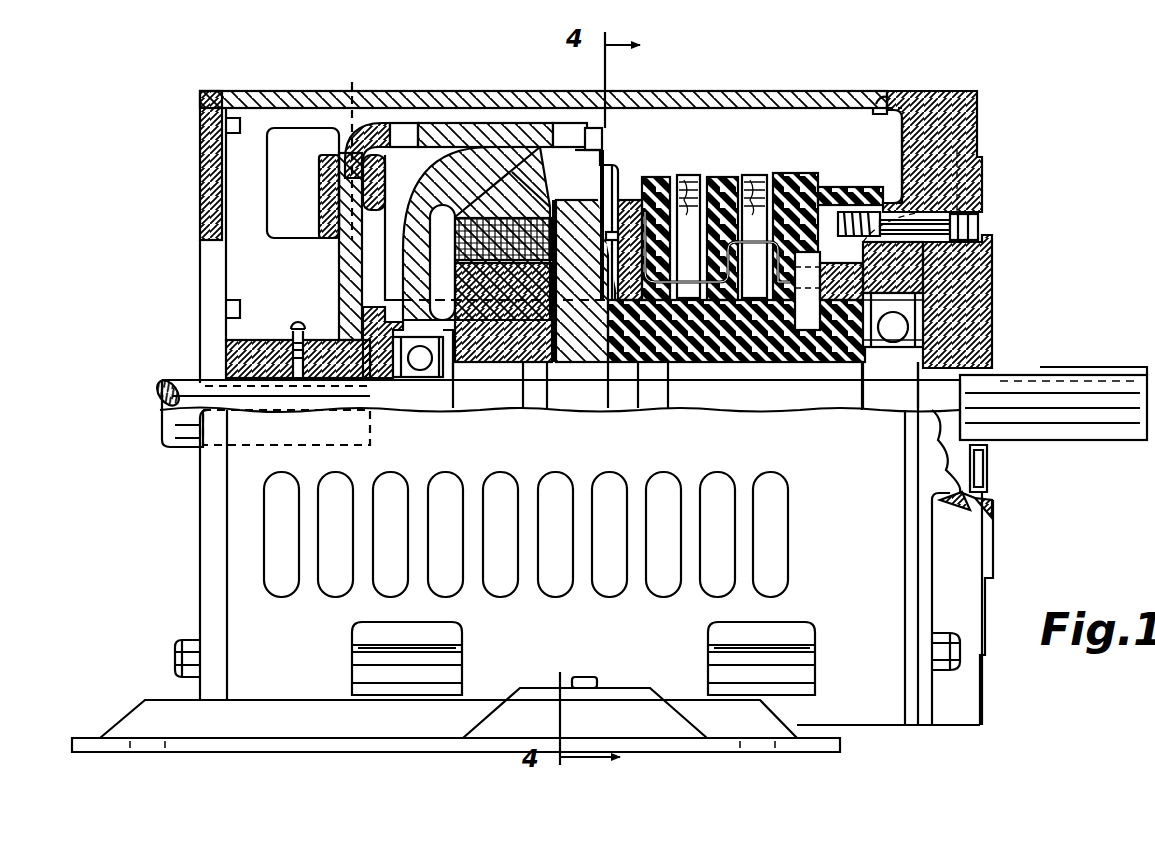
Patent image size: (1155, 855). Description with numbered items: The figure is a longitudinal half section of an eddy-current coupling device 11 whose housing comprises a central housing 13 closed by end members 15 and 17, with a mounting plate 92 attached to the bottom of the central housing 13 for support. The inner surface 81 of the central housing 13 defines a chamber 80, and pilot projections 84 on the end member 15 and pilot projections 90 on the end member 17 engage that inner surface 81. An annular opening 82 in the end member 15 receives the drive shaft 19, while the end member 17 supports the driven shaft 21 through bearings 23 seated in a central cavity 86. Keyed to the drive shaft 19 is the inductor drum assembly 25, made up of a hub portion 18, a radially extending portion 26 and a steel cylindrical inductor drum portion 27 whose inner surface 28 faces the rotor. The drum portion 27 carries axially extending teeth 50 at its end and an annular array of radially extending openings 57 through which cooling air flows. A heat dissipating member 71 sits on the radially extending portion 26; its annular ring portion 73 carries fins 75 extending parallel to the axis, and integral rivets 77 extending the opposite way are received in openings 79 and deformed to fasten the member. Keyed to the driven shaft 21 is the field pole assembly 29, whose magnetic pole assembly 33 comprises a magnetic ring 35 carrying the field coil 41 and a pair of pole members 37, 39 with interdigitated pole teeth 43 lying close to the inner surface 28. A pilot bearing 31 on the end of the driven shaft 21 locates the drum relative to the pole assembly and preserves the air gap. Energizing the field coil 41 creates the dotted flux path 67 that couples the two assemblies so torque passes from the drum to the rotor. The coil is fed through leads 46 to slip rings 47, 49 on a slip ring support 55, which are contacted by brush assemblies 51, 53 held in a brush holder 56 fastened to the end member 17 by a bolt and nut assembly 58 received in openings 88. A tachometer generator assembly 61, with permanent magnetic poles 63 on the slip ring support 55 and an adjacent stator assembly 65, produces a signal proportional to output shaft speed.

The eddy-current coupling device 11 is at (982, 92).
The central housing 13 is at (630, 101).
The end member 15 is at (206, 174).
The end member 17 is at (978, 126).
The hub portion 18 is at (238, 344).
The drive shaft 19 is at (184, 386).
The driven shaft 21 is at (1072, 418).
The bearings 23 is at (905, 326).
The inductor drum assembly 25 is at (322, 290).
The radially extending portion 26 is at (348, 270).
The cylindrical inductor drum portion 27 is at (478, 122).
The inner surface 28 is at (372, 150).
The field pole assembly 29 is at (536, 372).
The pilot bearing 31 is at (422, 365).
The magnetic pole assembly 33 is at (606, 139).
The magnetic ring 35 is at (505, 281).
The pole member 37 is at (408, 286).
The pole member 39 is at (582, 345).
The field coil 41 is at (503, 239).
The pole teeth 43 is at (520, 172).
The leads 46 is at (606, 184).
The slip ring 47 is at (726, 362).
The slip ring 49 is at (690, 362).
The axially extending teeth 50 is at (574, 123).
The brush assembly 51 is at (686, 172).
The brush assembly 53 is at (752, 172).
The slip ring support 55 is at (762, 360).
The brush holder 56 is at (792, 185).
The radially extending openings 57 is at (406, 123).
The bolt and nut assembly 58 is at (958, 212).
The tachometer generator assembly 61 is at (838, 342).
The permanent magnetic poles 63 is at (808, 335).
The stator assembly 65 is at (840, 210).
The flux path 67 is at (448, 123).
The heat dissipating member 71 is at (272, 225).
The annular ring portion 73 is at (322, 183).
The fins 75 is at (288, 133).
The rivets 77 is at (375, 210).
The openings 79 is at (350, 84).
The chamber 80 is at (830, 124).
The inner surface 81 is at (704, 106).
The annular opening 82 is at (210, 243).
The pilot projections 84 is at (240, 133).
The central cavity 86 is at (932, 280).
The openings 88 is at (980, 226).
The pilot projections 90 is at (878, 104).
The mounting plate 92 is at (842, 746).